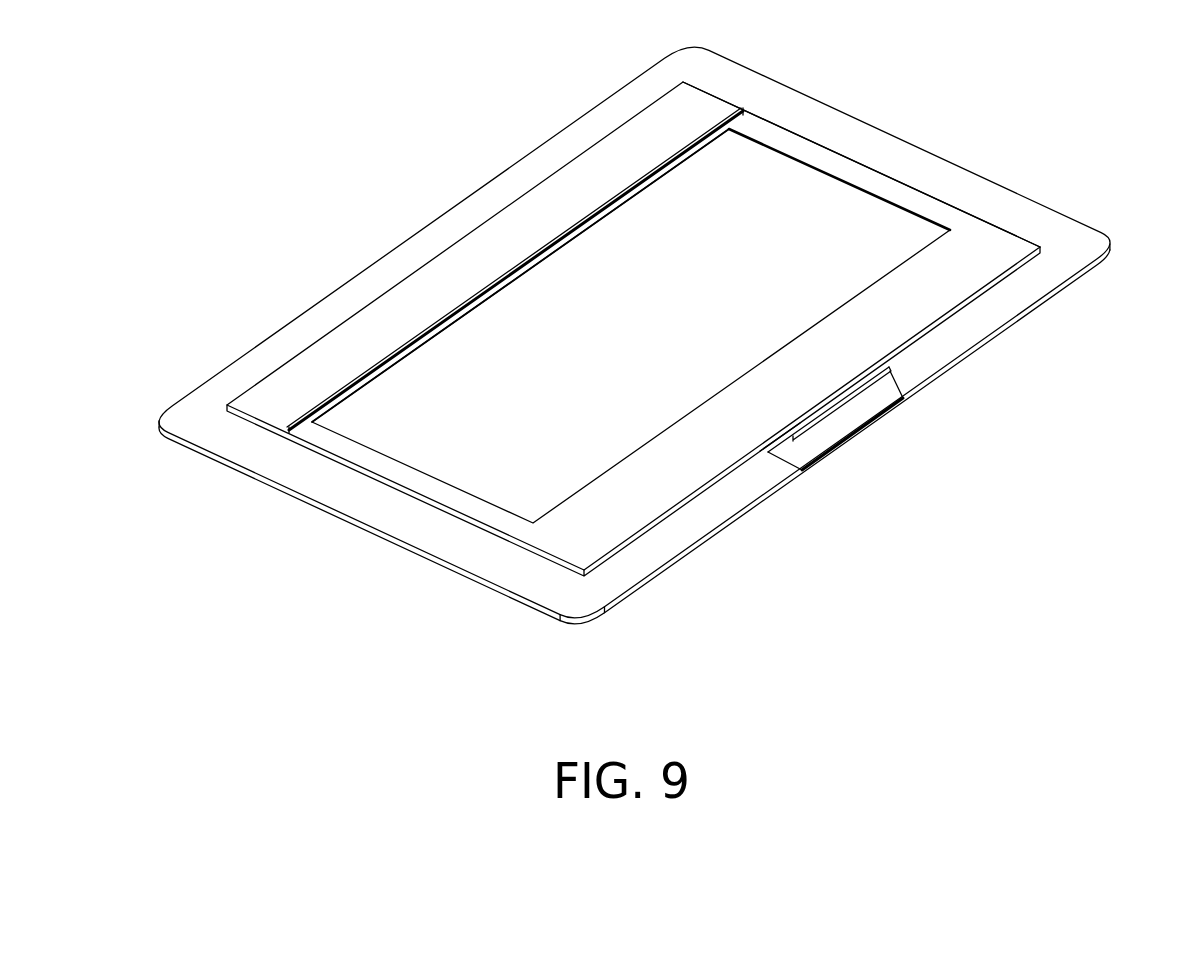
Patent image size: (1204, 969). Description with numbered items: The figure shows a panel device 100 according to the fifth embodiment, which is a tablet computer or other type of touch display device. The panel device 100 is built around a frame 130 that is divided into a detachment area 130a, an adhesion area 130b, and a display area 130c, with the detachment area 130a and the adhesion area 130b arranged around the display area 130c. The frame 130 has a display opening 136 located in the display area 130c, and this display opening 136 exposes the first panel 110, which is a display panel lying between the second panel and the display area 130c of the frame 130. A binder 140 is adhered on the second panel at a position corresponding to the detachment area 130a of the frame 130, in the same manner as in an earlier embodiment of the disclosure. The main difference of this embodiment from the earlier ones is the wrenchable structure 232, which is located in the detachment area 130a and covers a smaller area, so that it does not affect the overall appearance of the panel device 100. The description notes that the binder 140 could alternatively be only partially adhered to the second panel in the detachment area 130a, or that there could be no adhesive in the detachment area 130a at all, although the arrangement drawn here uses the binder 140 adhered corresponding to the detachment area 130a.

The panel device 100 is at (340, 193).
The first panel 110 is at (785, 180).
The frame 130 is at (669, 335).
The detachment area 130a is at (877, 399).
The adhesion area 130b is at (1008, 205).
The display area 130c is at (873, 178).
The display opening 136 is at (683, 162).
The binder 140 is at (833, 430).
The wrenchable structure 232 is at (781, 440).